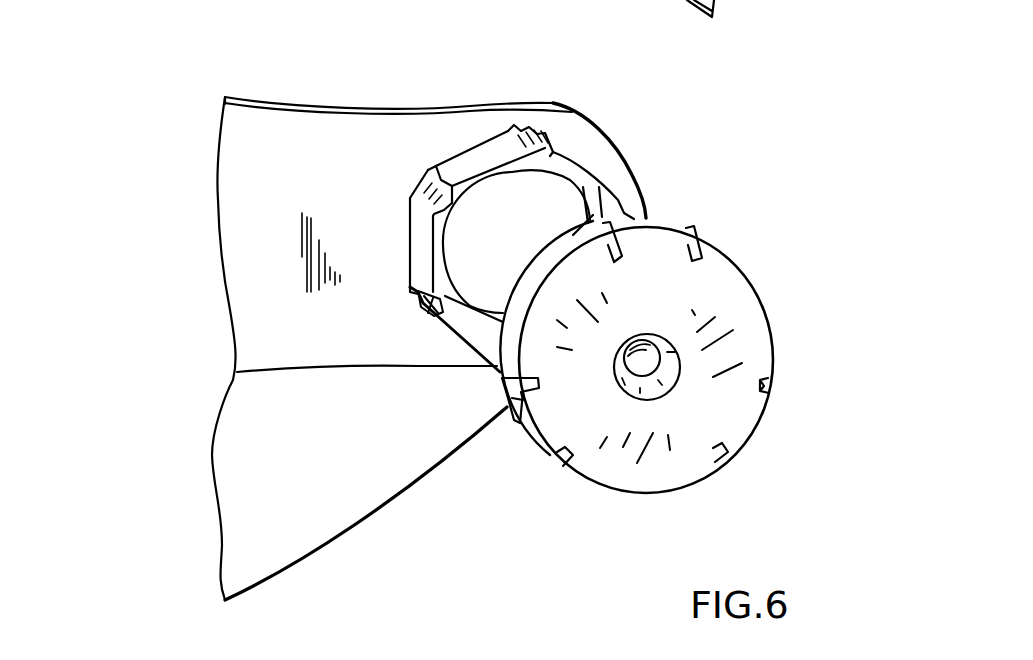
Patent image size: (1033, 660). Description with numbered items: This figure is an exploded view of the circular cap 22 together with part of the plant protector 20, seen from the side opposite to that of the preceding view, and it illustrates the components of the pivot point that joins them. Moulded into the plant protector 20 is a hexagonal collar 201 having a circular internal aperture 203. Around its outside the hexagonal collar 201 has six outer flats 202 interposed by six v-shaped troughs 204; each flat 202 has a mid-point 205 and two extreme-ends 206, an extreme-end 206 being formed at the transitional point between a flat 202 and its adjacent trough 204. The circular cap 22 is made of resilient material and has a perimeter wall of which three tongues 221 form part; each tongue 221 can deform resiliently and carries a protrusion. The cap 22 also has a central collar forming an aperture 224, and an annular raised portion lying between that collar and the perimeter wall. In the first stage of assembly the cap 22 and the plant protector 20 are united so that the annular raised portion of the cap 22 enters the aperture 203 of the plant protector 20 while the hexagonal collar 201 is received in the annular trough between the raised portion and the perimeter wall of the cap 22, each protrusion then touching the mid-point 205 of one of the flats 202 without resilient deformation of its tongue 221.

The plant protector 20 is at (302, 179).
The circular cap 22 is at (760, 297).
The hexagonal collar 201 is at (474, 350).
The outer flats 202 is at (480, 157).
The circular internal aperture 203 is at (544, 172).
The v-shaped troughs 204 is at (430, 188).
The mid-point 205 is at (410, 246).
The extreme-ends 206 is at (410, 191).
The tongues 221 is at (655, 225).
The aperture 224 is at (650, 363).